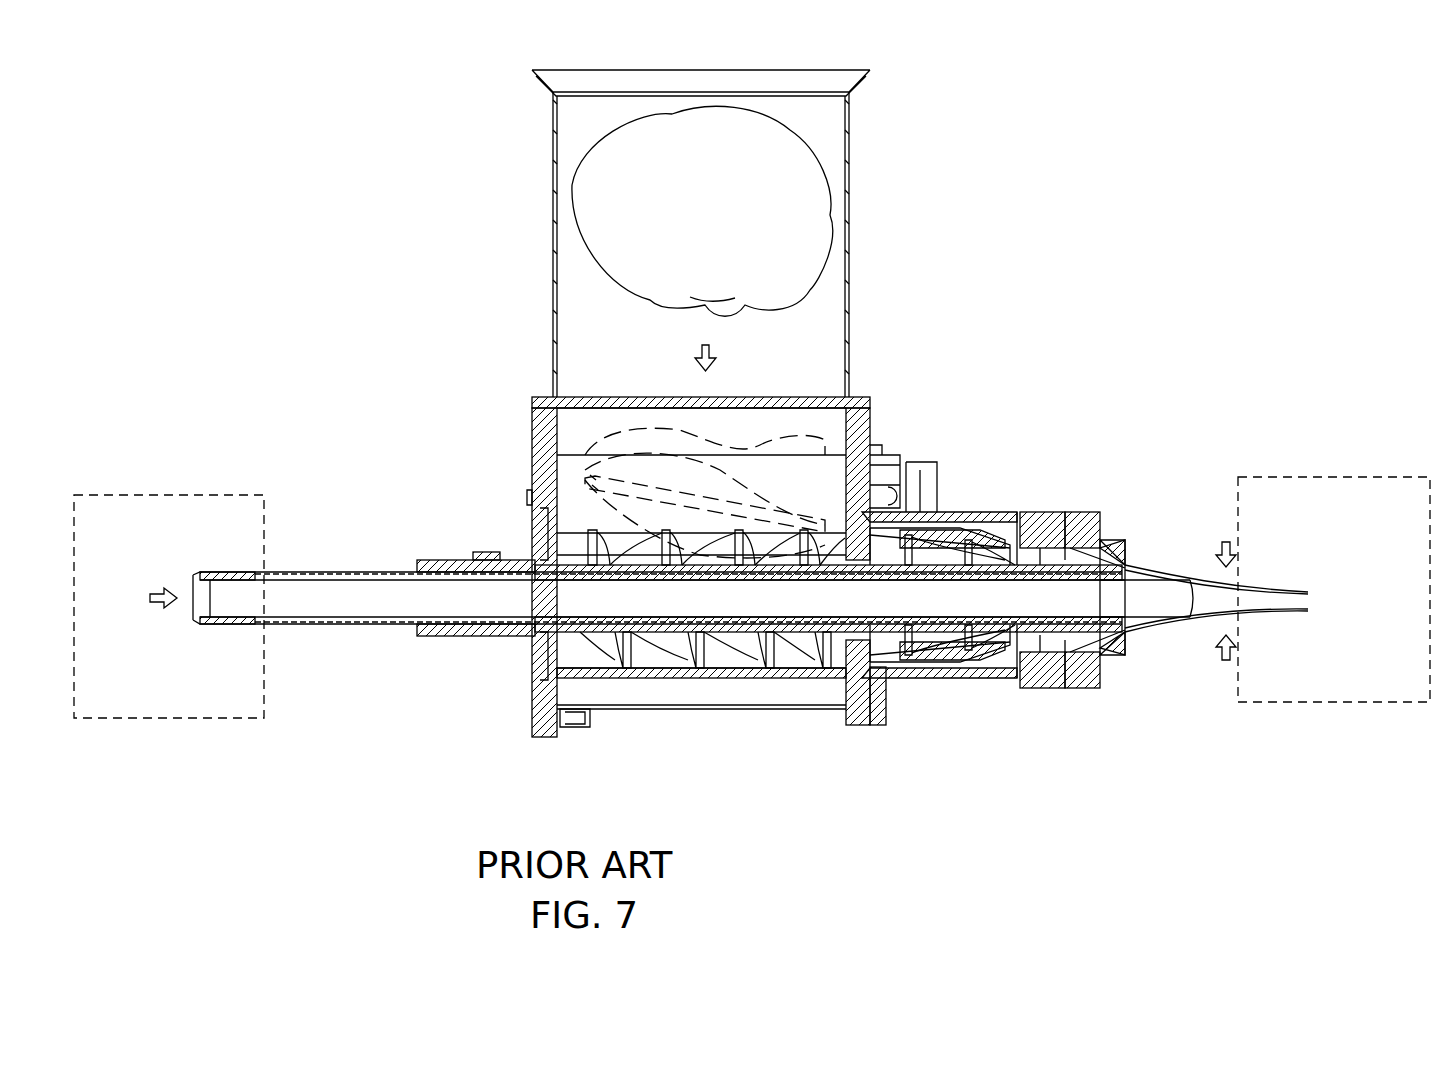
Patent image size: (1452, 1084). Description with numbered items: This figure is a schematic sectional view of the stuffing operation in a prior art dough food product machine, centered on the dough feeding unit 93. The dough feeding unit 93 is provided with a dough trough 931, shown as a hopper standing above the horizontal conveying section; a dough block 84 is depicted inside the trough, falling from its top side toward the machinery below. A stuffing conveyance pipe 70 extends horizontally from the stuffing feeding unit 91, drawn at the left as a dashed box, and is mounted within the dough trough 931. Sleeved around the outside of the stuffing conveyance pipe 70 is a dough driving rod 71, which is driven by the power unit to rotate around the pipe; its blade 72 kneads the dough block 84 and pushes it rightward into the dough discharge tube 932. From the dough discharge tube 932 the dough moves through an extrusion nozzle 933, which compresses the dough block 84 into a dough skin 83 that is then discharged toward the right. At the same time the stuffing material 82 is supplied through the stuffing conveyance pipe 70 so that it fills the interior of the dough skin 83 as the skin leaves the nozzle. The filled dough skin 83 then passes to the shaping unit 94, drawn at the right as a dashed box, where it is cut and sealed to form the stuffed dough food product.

The stuffing conveyance pipe 70 is at (350, 620).
The dough driving rod 71 is at (465, 640).
The blade 72 is at (818, 640).
The stuffing material 82 is at (1158, 605).
The dough skin 83 is at (1198, 622).
The dough block 84 is at (818, 200).
The stuffing feeding unit 91 is at (162, 512).
The dough feeding unit 93 is at (441, 97).
The dough trough 931 is at (862, 433).
The dough discharge tube 932 is at (960, 513).
The extrusion nozzle 933 is at (1100, 540).
The shaping unit 94 is at (1370, 493).